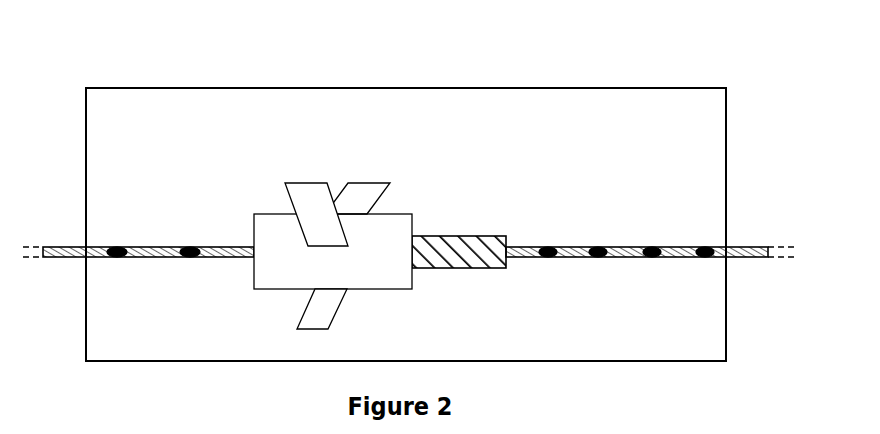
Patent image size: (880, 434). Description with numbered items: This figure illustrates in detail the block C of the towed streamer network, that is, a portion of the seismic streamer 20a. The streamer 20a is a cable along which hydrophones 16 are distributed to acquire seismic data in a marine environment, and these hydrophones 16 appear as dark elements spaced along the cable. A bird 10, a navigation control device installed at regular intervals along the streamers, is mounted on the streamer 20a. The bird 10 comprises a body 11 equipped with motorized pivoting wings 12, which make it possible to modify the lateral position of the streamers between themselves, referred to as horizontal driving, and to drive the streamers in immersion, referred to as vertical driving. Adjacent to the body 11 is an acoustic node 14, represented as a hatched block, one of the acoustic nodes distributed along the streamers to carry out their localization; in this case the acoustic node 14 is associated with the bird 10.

The block C is at (579, 88).
The bird 10 is at (303, 219).
The body 11 is at (264, 277).
The motorized pivoting wings 12 is at (303, 190).
The acoustic node 14 is at (463, 267).
The hydrophones 16 is at (598, 246).
The seismic streamer 20a is at (737, 246).